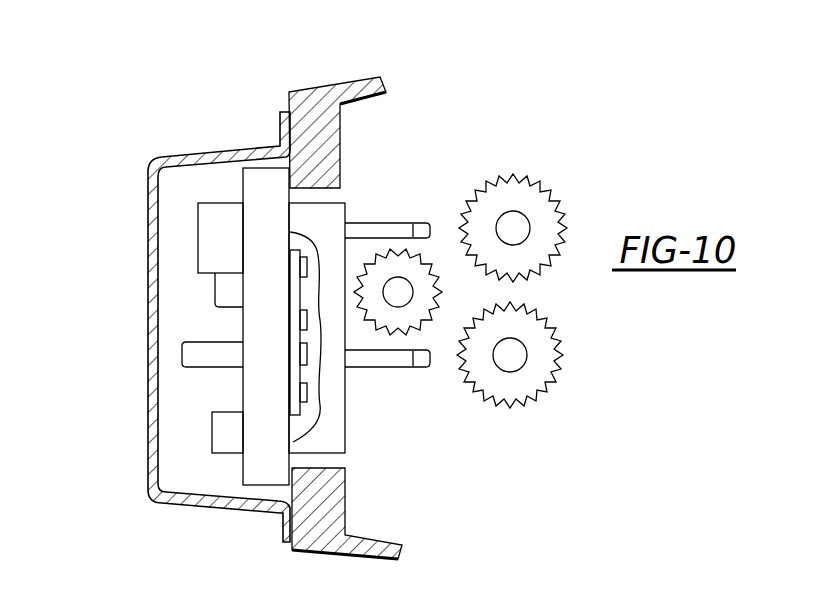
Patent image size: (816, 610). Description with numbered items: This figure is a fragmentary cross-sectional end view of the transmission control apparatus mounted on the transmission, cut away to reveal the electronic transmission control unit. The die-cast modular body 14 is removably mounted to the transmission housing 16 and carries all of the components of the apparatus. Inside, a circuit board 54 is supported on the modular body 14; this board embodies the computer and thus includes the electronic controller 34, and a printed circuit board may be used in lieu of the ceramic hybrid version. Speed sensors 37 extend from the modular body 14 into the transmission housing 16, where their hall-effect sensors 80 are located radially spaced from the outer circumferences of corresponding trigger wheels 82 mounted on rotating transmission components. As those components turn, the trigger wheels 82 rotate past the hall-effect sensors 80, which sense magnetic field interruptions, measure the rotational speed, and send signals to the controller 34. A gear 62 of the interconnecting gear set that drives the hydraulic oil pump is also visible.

The modular body 14 is at (246, 465).
The transmission housing 16 is at (310, 97).
The electronic controller 34 is at (199, 328).
The ceramic hybrid circuit board 54 is at (300, 280).
The speed sensor 37 is at (411, 228).
The gear 62 is at (356, 262).
The hall-effect sensor 80 is at (430, 230).
The trigger wheel 82 is at (535, 185).